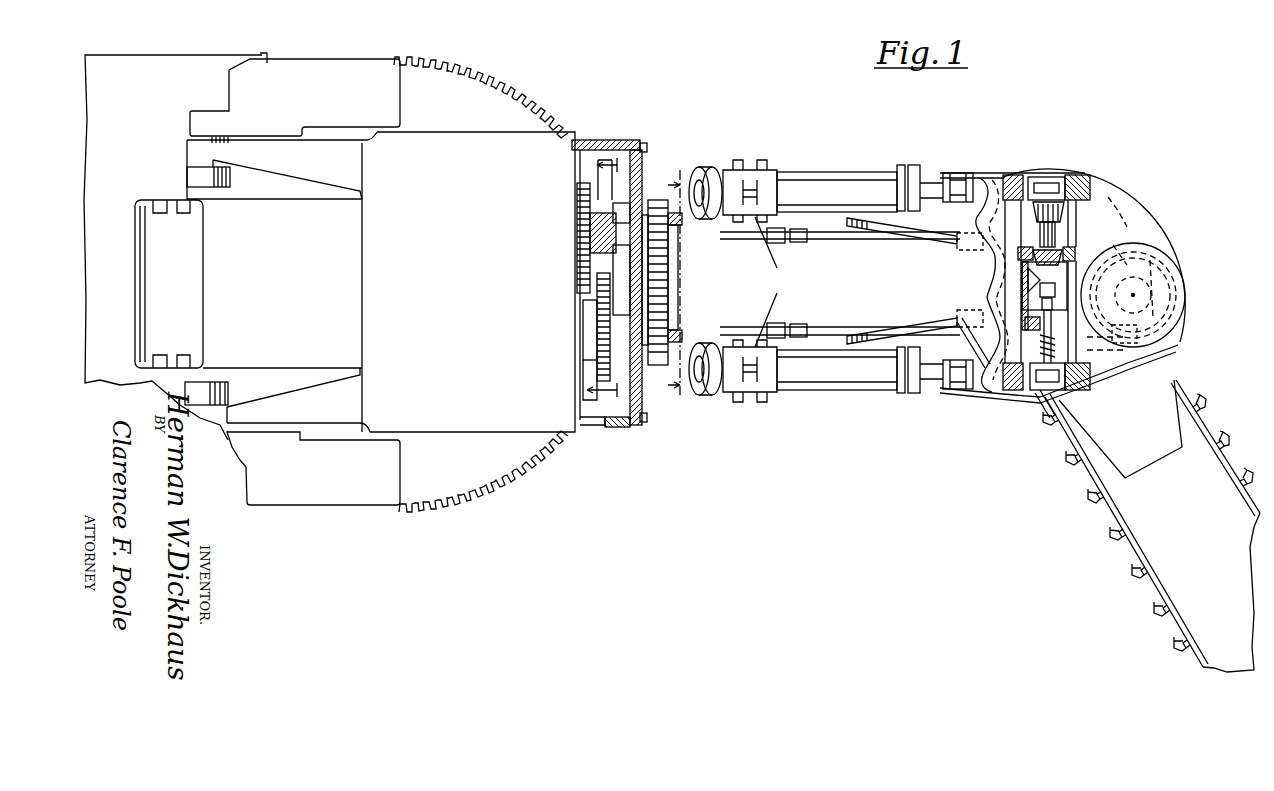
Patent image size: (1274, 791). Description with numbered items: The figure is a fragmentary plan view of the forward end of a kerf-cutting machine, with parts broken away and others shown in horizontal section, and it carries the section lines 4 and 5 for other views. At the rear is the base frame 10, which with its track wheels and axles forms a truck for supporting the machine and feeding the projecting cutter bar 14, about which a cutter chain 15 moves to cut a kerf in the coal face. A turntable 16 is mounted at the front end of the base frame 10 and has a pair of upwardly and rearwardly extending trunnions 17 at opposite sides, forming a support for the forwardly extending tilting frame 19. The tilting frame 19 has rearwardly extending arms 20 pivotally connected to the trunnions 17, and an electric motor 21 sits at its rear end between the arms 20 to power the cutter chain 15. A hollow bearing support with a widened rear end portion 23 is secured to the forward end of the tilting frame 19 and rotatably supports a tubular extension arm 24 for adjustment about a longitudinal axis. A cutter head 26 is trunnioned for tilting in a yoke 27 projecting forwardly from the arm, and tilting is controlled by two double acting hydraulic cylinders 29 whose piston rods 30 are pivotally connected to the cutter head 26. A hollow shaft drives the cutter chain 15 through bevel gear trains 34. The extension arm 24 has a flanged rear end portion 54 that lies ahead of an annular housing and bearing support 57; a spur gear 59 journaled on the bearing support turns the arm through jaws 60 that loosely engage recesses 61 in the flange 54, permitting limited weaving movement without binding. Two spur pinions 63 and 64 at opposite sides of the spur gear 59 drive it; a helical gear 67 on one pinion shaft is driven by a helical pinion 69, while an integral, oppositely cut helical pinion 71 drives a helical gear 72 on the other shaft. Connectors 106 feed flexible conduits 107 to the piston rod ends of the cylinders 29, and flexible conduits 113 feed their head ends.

The base frame 10 is at (171, 47).
The cutter bar 14 is at (1133, 505).
The cutter chain 15 is at (1110, 537).
The turntable 16 is at (450, 502).
The trunnions 17 is at (230, 100).
The tilting frame 19 is at (455, 132).
The rearwardly extending arms 20 is at (288, 166).
The electric motor 21 is at (134, 240).
The widened rear end portion 23 is at (648, 418).
The tubular extension arm 24 is at (814, 228).
The cutter head 26 is at (1150, 228).
The yoke 27 is at (1010, 178).
The double acting hydraulic cylinders 29 is at (872, 160).
The piston rods 30 is at (946, 170).
The bevel gear trains 34 is at (1078, 205).
The section line 4 is at (664, 283).
The section line 5 is at (591, 280).
The flanged rear end portion 54 is at (705, 248).
The annular housing and bearing support 57 is at (660, 200).
The spur gear 59 is at (648, 215).
The jaws 60 is at (688, 277).
The recesses 61 is at (688, 298).
The spur pinion 63 is at (672, 200).
The spur pinion 64 is at (705, 338).
The helical gear 67 is at (568, 190).
The helical pinion 69 is at (590, 316).
The helical pinion 71 is at (610, 237).
The helical gear 72 is at (597, 372).
The connectors 106 is at (970, 300).
The flexible conduits 107 is at (900, 320).
The flexible conduits 113 is at (850, 236).